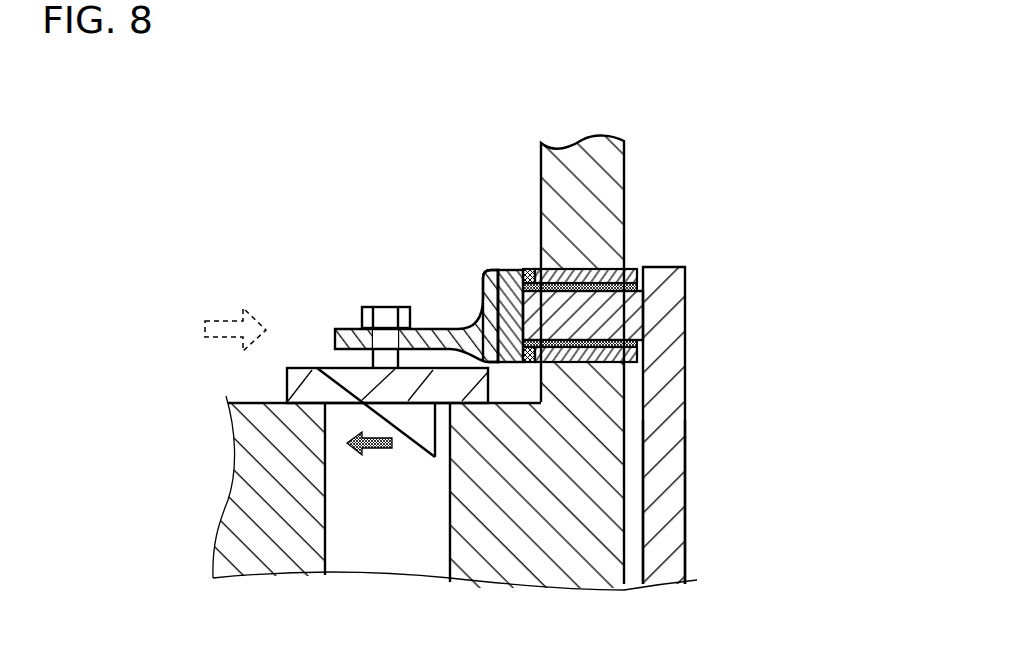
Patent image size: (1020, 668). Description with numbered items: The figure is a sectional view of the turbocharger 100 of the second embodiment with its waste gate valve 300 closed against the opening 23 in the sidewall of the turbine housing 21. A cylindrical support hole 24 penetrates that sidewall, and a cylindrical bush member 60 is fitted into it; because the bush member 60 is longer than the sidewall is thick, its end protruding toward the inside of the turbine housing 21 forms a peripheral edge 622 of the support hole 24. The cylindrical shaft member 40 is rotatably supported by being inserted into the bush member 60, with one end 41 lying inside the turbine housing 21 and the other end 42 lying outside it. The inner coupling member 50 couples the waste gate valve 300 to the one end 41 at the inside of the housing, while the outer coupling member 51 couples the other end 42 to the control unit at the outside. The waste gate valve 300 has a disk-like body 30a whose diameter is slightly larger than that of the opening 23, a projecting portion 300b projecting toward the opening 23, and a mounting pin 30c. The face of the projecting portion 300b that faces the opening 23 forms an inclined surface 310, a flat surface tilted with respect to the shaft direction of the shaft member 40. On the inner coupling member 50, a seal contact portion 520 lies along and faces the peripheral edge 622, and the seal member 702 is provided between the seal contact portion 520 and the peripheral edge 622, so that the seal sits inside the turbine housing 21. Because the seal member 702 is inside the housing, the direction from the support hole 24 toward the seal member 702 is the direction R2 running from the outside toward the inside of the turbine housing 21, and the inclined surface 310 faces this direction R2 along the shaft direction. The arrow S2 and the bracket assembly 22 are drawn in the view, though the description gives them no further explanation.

The turbocharger 100 is at (641, 317).
The turbine housing 21 is at (565, 157).
The bracket 22 is at (416, 218).
The opening 23 is at (380, 500).
The support hole 24 is at (572, 276).
The shaft member 40 is at (660, 284).
The one end of the shaft member 41 is at (481, 270).
The other end of the shaft member 42 is at (617, 317).
The inner coupling member 50 is at (470, 339).
The outer coupling member 51 is at (680, 520).
The bush member 60 is at (654, 279).
The waste gate valve 300 is at (311, 287).
The body 30a is at (297, 380).
The projecting portion 300b is at (413, 423).
The mounting pin 30c is at (398, 292).
The inclined surface 310 is at (428, 460).
The seal contact portion 520 is at (497, 270).
The peripheral edge 622 is at (538, 268).
The seal member 702 is at (526, 272).
The direction of movement S2 is at (193, 301).
The direction R2 is at (378, 443).